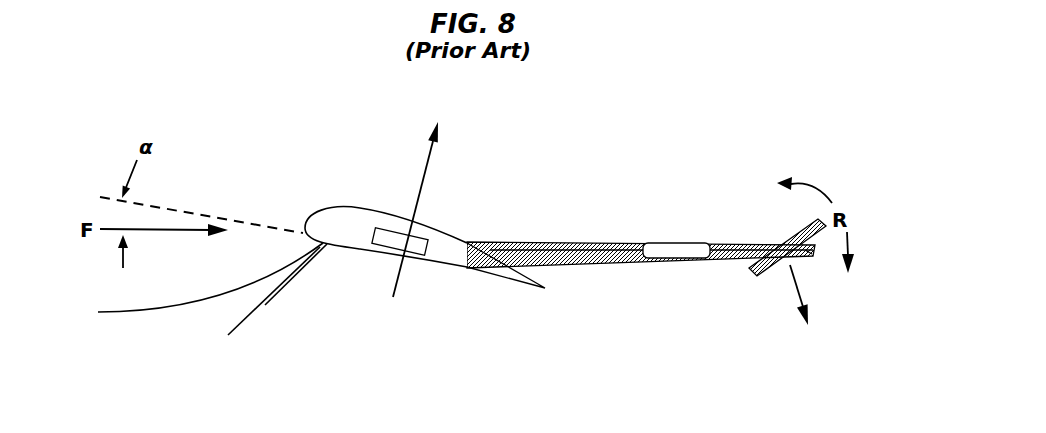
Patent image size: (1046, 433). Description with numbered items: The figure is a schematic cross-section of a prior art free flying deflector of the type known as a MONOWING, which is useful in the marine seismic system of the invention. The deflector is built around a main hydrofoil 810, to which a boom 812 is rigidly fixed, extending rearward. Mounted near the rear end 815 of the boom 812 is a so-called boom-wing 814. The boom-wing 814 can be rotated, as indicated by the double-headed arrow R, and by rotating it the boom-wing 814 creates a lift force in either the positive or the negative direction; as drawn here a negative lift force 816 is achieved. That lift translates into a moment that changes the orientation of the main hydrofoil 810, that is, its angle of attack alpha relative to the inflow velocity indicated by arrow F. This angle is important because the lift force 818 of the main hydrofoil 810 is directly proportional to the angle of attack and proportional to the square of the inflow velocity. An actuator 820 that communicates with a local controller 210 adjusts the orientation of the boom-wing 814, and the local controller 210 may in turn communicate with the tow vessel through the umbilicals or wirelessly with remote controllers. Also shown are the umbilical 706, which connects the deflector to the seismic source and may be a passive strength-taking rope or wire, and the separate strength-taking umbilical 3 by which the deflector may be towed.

The strength-taking umbilical 3 is at (133, 313).
The local controller 210 is at (412, 246).
The umbilical 706 is at (263, 310).
The main hydrofoil 810 is at (325, 210).
The boom 812 is at (547, 242).
The boom-wing 814 is at (793, 240).
The rear end 815 is at (807, 252).
The negative lift force 816 is at (794, 283).
The lift force 818 is at (420, 175).
The actuator 820 is at (674, 251).